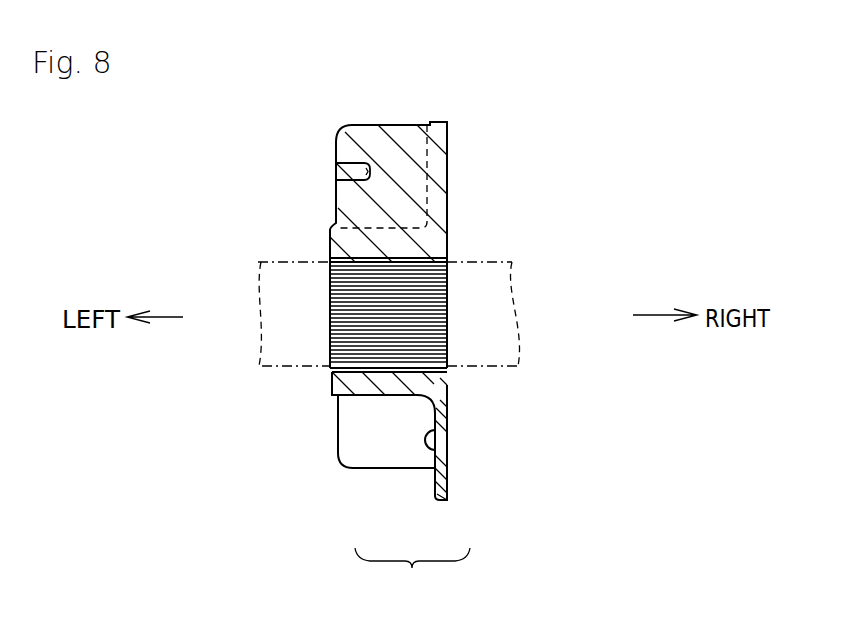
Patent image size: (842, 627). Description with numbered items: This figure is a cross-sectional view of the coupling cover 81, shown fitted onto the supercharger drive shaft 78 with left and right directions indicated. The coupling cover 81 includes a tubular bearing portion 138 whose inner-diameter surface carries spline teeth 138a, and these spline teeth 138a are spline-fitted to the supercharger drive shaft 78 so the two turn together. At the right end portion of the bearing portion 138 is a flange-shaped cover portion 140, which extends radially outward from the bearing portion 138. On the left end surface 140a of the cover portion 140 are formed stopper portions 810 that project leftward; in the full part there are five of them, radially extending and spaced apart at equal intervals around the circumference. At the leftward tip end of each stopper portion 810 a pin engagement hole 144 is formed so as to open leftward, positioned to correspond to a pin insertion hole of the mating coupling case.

The stopper portion 810 is at (370, 148).
The pin engagement hole 144 is at (336, 175).
The spline teeth 138a is at (432, 286).
The supercharger drive shaft 78 is at (502, 367).
The bearing portion 138 is at (400, 383).
The cover portion 140 is at (447, 477).
The left end surface 140a is at (430, 448).
The coupling cover 81 is at (412, 577).